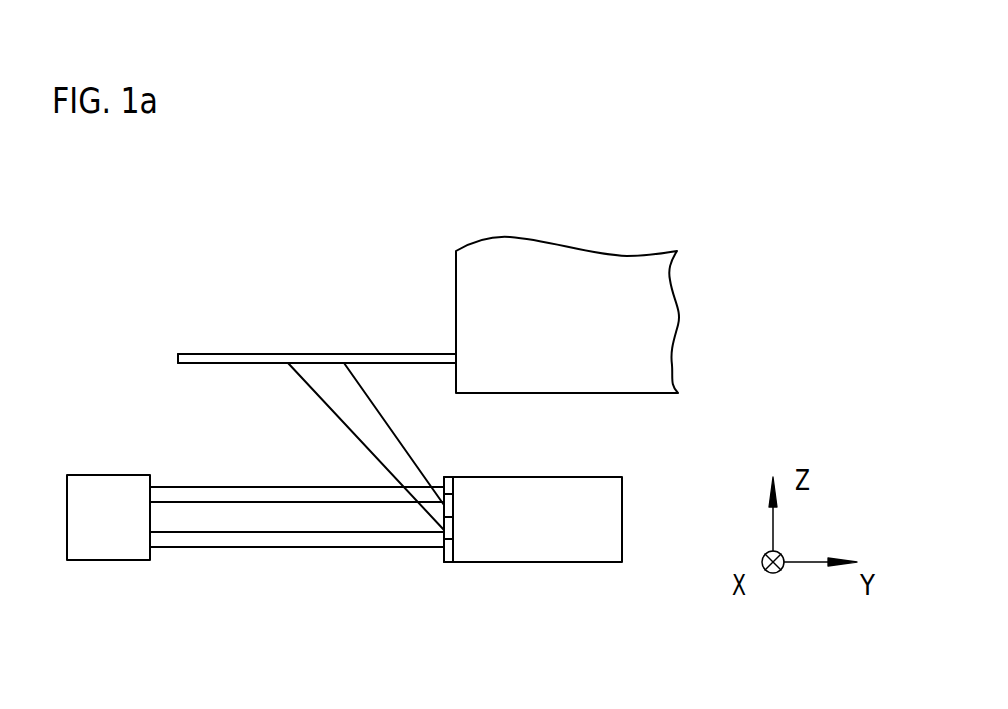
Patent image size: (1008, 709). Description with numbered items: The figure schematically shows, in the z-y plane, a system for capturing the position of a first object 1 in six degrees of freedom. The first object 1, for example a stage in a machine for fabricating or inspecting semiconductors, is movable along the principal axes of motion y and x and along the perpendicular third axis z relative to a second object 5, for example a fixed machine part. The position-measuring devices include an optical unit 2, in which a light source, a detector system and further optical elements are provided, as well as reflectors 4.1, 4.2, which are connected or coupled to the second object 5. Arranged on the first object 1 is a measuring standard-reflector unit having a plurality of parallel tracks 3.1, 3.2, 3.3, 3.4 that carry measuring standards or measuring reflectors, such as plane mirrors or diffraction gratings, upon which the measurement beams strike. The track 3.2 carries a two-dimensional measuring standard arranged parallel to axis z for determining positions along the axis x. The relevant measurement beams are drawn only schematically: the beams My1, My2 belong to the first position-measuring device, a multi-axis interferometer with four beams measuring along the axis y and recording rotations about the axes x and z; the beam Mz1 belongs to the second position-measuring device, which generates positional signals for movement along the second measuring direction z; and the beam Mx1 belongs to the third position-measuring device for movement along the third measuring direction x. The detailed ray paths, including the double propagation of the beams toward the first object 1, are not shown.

The first object 1 is at (587, 550).
The optical unit 2 is at (97, 543).
The track 3.1 is at (450, 553).
The two-dimensional measuring standard 3.2 is at (453, 528).
The track 3.3 is at (450, 508).
The track 3.4 is at (448, 482).
The reflector 4.1 is at (233, 358).
The reflector 4.2 is at (317, 358).
The second object 5 is at (647, 318).
The measurement beam Mx1 is at (185, 502).
The measurement beam My1 is at (292, 487).
The measurement beam My2 is at (225, 550).
The measurement beam Mz1 is at (365, 535).